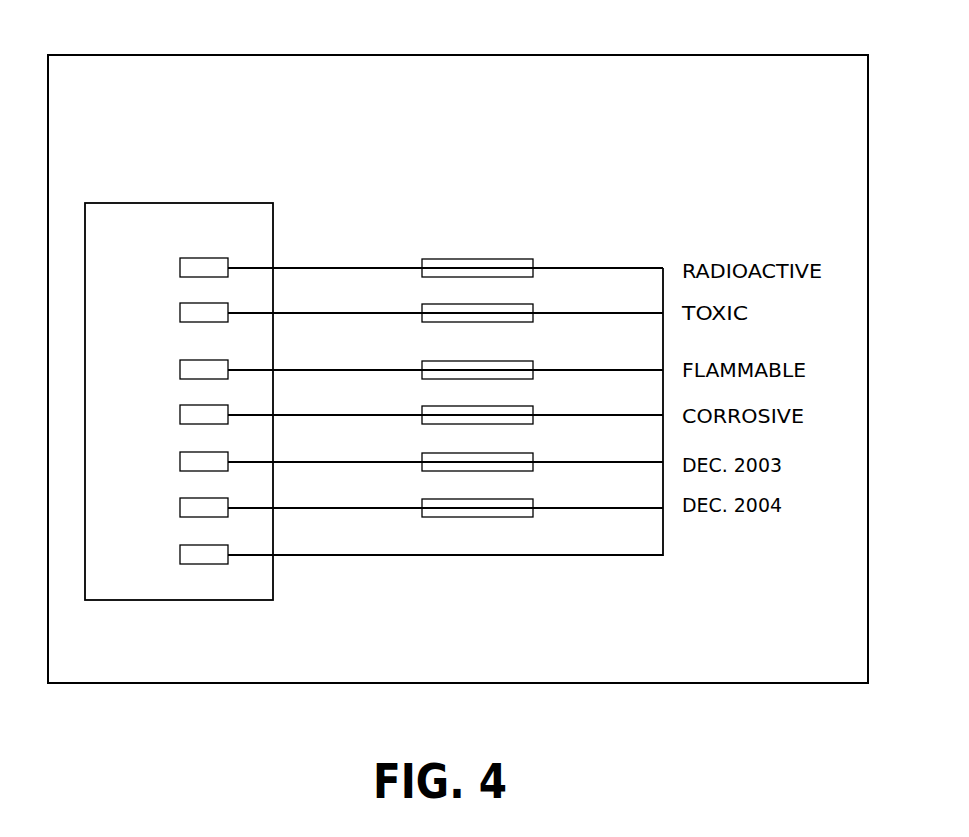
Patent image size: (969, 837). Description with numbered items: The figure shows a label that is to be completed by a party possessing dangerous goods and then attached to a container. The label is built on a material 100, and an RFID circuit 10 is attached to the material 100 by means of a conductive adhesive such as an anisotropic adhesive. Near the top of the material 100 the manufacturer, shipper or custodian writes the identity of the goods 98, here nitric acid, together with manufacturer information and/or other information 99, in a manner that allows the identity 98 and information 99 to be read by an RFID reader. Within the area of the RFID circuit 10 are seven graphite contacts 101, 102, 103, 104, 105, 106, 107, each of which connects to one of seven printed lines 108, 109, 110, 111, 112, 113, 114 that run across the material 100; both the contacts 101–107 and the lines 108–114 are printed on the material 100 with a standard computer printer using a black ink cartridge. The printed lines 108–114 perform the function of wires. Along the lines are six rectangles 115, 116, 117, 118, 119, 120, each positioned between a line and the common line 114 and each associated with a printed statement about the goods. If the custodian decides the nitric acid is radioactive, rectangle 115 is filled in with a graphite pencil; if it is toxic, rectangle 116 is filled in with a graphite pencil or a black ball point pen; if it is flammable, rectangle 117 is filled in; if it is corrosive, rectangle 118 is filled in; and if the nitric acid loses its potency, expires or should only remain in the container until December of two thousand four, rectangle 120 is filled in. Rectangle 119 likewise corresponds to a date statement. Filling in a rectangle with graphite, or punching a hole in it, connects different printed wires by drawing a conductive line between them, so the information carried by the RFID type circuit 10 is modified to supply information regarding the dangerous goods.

The material 100 is at (236, 55).
The RFID circuit 10 is at (193, 203).
The identity of the goods 98 is at (507, 123).
The manufacturer information 99 is at (595, 150).
The graphite contact 101 is at (181, 258).
The graphite contact 102 is at (181, 303).
The graphite contact 103 is at (181, 360).
The graphite contact 104 is at (181, 405).
The graphite contact 105 is at (181, 452).
The graphite contact 106 is at (181, 498).
The graphite contact 107 is at (181, 545).
The printed line 108 is at (370, 268).
The printed line 109 is at (370, 313).
The printed line 110 is at (370, 370).
The printed line 111 is at (368, 415).
The printed line 112 is at (368, 462).
The printed line 113 is at (368, 508).
The printed line 114 is at (376, 555).
The rectangle 115 is at (528, 257).
The rectangle 116 is at (528, 302).
The rectangle 117 is at (524, 358).
The rectangle 118 is at (524, 404).
The rectangle 119 is at (524, 452).
The rectangle 120 is at (524, 497).